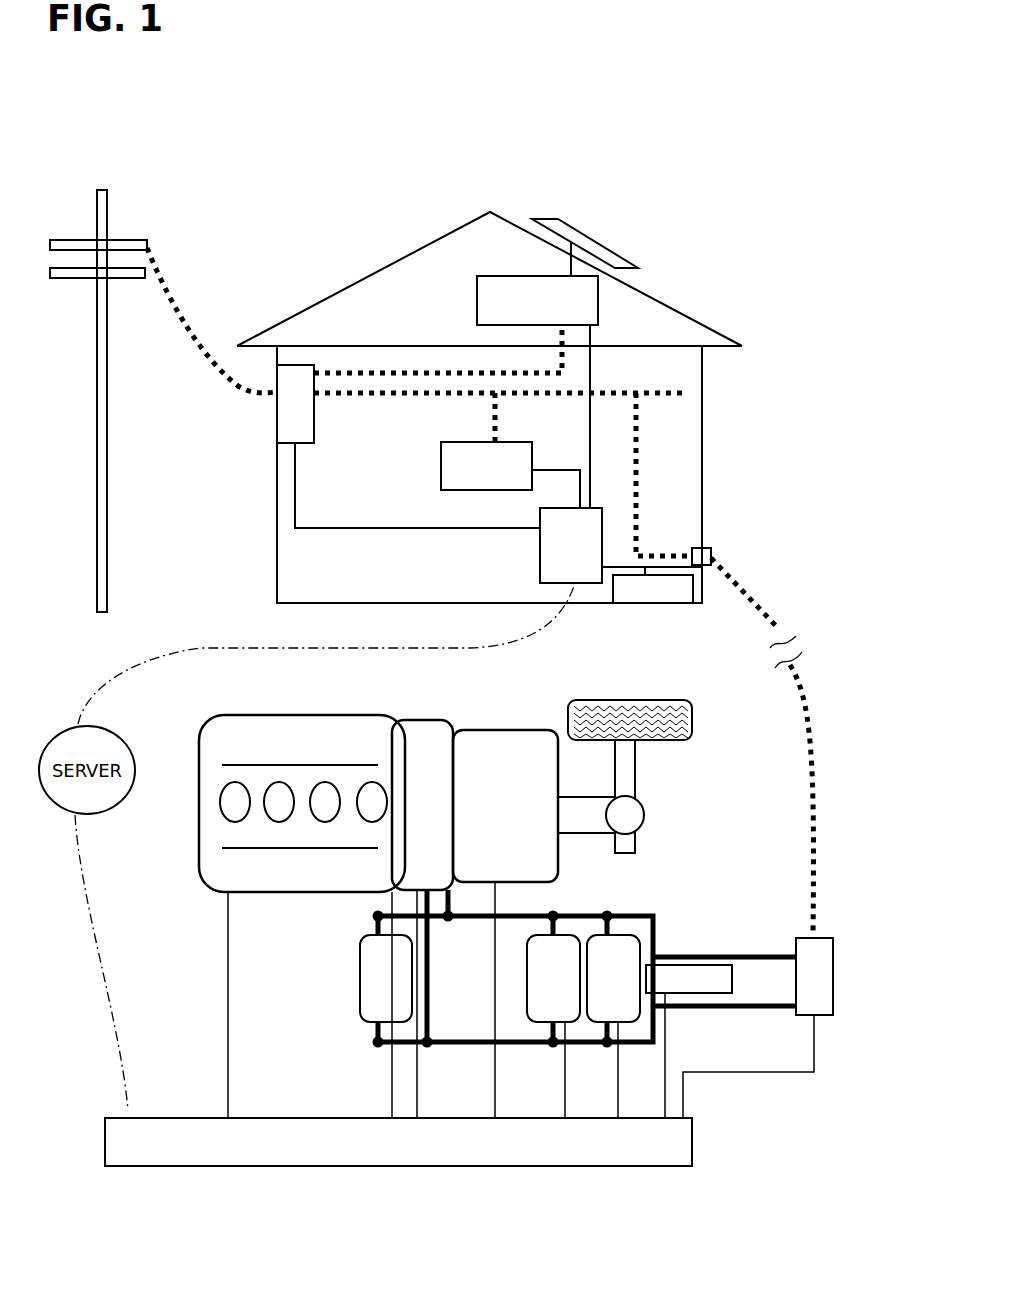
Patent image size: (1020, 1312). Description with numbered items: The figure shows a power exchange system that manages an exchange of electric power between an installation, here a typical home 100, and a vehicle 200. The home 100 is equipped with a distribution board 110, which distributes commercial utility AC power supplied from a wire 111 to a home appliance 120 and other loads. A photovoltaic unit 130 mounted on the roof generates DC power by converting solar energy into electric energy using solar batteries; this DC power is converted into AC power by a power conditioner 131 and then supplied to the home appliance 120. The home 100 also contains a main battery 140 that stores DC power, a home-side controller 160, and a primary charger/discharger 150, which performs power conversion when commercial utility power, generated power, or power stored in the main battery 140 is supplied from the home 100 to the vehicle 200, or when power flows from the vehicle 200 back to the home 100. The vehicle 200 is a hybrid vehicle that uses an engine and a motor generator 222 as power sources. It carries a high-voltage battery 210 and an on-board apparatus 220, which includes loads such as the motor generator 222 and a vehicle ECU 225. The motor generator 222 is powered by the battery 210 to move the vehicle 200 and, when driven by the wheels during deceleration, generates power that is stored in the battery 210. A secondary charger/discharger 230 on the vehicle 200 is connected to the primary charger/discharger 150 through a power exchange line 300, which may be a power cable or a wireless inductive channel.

The installation (home) 100 is at (355, 225).
The wire 111 is at (188, 305).
The distribution board 110 is at (314, 425).
The home appliance 120 is at (463, 442).
The photovoltaic unit 130 is at (568, 242).
The power conditioner 131 is at (598, 298).
The main battery 140 is at (660, 603).
The primary charger/discharger 150 is at (705, 548).
The home-side controller 160 is at (540, 556).
The vehicle 200 is at (184, 724).
The battery 210 is at (734, 978).
The on-board apparatus 220 is at (350, 973).
The motor generator 222 is at (420, 720).
The vehicle ECU 225 is at (627, 1166).
The secondary charger/discharger 230 is at (796, 953).
The power exchange line 300 is at (790, 716).